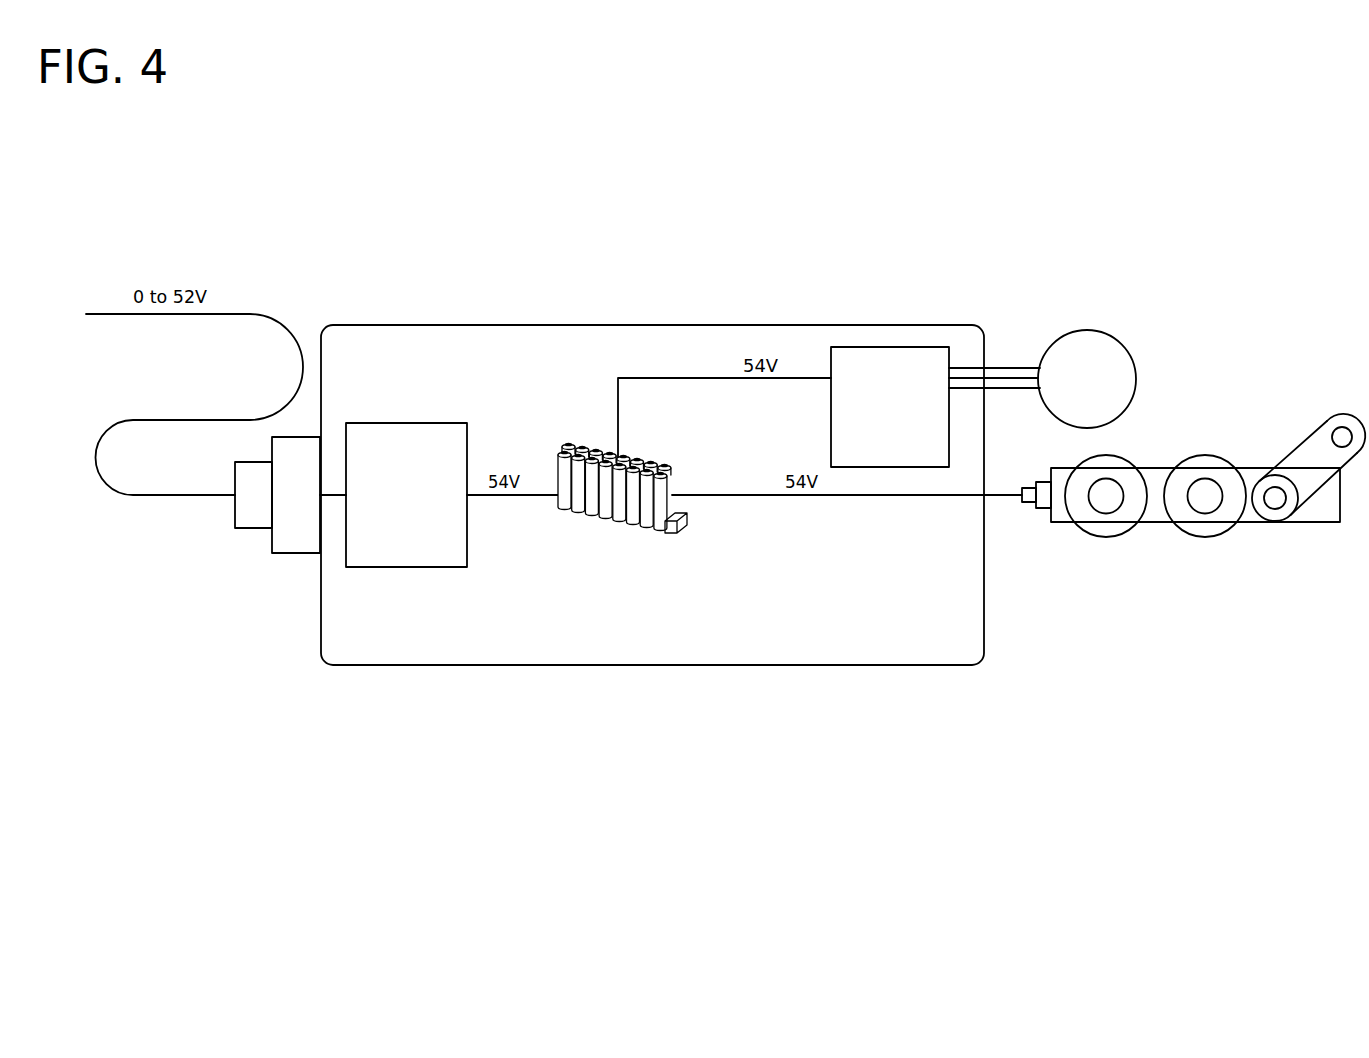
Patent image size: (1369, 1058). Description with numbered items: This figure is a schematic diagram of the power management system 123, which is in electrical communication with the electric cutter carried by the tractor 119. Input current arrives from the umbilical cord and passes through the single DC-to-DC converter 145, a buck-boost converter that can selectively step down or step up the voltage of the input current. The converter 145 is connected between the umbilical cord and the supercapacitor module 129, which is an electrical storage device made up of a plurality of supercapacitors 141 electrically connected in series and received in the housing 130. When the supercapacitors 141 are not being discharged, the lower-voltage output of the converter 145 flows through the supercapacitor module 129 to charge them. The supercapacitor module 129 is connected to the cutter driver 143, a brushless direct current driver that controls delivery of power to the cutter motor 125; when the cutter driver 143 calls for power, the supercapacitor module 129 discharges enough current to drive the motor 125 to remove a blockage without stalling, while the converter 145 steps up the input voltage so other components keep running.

The tractor 119 is at (1158, 523).
The power management system 123 is at (260, 798).
The electrical motor 125 is at (1105, 332).
The supercapacitor module 129 is at (578, 430).
The housing 130 is at (448, 667).
The supercapacitors 141 is at (679, 487).
The cutter driver 143 is at (899, 344).
The DC-to-DC converter 145 is at (409, 418).